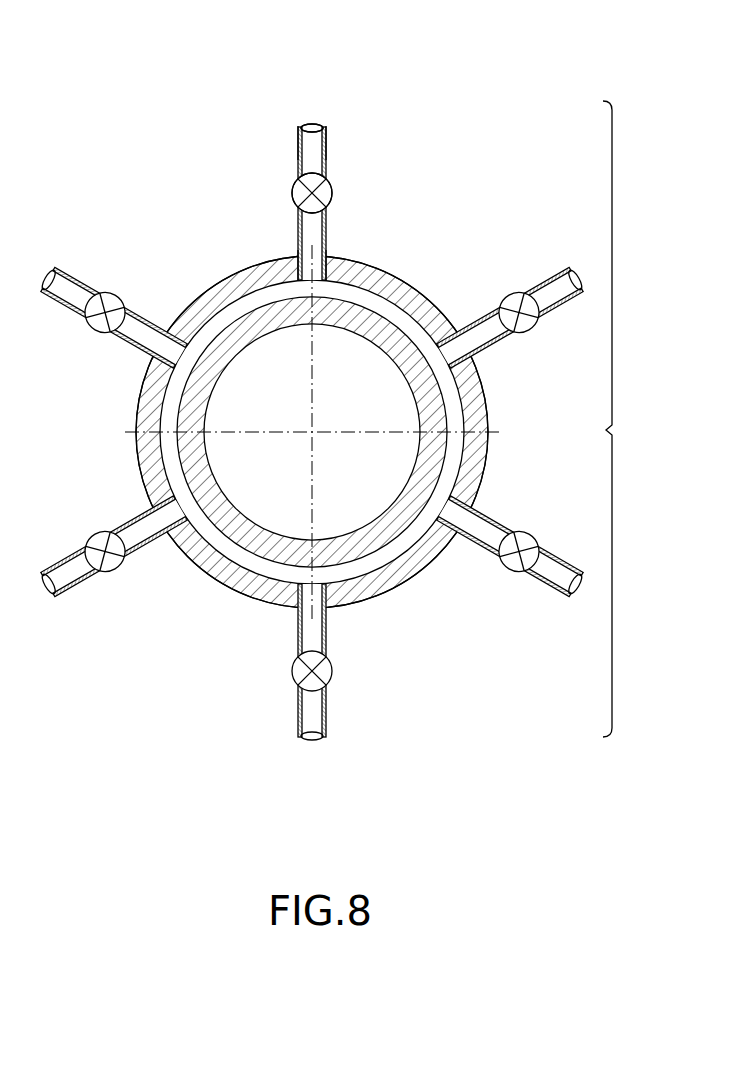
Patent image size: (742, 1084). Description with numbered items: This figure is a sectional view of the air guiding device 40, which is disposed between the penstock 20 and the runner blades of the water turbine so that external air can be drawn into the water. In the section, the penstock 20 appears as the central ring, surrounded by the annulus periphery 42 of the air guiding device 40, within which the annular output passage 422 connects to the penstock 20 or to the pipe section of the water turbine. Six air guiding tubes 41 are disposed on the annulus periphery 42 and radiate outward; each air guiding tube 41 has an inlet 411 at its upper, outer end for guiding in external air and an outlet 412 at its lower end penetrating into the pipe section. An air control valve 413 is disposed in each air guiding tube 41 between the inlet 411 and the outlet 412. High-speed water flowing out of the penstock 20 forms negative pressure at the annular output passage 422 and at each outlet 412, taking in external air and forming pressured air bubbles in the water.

The penstock 20 is at (258, 323).
The air guiding device 40 is at (346, 420).
The air guiding tube 41 is at (327, 150).
The inlet 411 is at (313, 124).
The outlet 412 is at (346, 288).
The air control valve 413 is at (326, 193).
The annulus periphery 42 is at (487, 392).
The annular output passage 422 is at (425, 313).